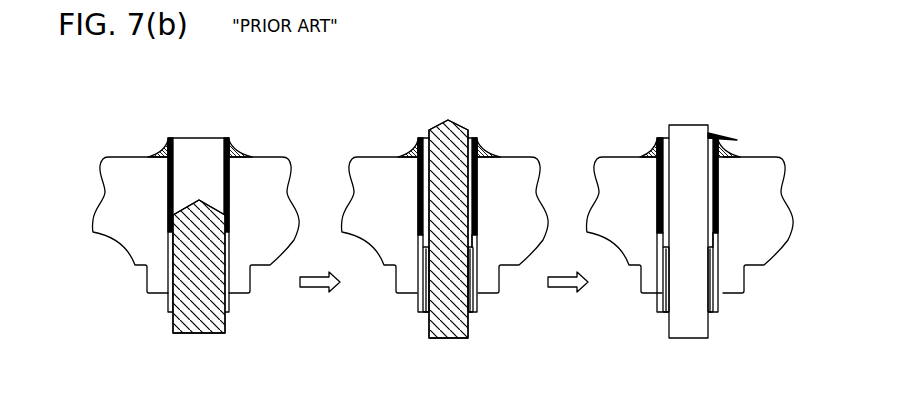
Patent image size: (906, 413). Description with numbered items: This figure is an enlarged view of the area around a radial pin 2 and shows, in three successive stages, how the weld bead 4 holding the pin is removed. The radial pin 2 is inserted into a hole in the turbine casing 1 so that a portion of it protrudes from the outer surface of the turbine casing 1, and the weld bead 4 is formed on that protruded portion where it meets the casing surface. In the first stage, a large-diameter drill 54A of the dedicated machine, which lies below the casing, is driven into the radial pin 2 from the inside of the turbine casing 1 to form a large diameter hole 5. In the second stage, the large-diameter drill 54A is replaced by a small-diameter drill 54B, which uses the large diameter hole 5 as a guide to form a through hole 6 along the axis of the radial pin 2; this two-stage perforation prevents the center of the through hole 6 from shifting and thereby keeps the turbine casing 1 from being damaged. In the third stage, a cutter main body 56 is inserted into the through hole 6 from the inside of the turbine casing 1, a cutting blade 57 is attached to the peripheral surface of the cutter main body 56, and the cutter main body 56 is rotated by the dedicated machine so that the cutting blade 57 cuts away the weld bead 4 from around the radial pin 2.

The turbine casing 1 is at (118, 156).
The radial pin 2 is at (213, 138).
The weld bead 4 is at (236, 150).
The large diameter hole 5 is at (428, 272).
The through hole 6 is at (458, 232).
The large-diameter drill 54A is at (229, 322).
The small-diameter drill 54B is at (471, 330).
The cutter main body 56 is at (711, 325).
The cutting blade 57 is at (721, 135).